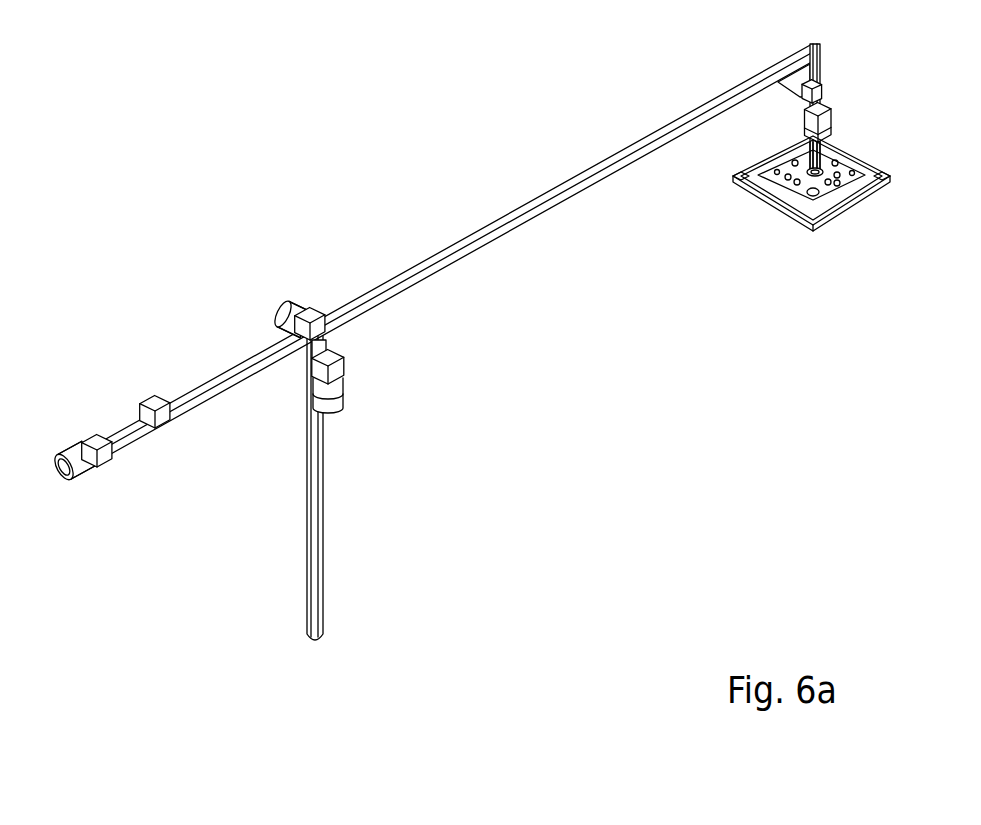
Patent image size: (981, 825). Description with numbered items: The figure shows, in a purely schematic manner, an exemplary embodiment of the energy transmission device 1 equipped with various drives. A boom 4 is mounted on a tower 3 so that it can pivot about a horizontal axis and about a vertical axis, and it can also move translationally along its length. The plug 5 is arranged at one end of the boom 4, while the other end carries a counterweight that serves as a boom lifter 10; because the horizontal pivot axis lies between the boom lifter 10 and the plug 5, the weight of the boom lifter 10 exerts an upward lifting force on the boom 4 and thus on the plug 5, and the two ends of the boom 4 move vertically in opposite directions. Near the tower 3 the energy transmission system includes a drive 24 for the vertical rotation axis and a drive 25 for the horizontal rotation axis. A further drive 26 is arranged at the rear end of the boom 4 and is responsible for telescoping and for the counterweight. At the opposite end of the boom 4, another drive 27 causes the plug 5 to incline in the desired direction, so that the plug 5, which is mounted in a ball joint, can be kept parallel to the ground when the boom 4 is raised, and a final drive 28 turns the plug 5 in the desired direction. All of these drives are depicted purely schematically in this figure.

The energy transmission device 1 is at (233, 450).
The tower 3 is at (307, 555).
The boom 4 is at (556, 204).
The plug 5 is at (794, 214).
The boom lifter 10 is at (153, 396).
The drive for the vertical rotation axis 24 is at (338, 407).
The drive for a horizontal rotation axis 25 is at (291, 312).
The drive 26 is at (88, 443).
The drive 27 is at (789, 85).
The drive 28 is at (830, 123).